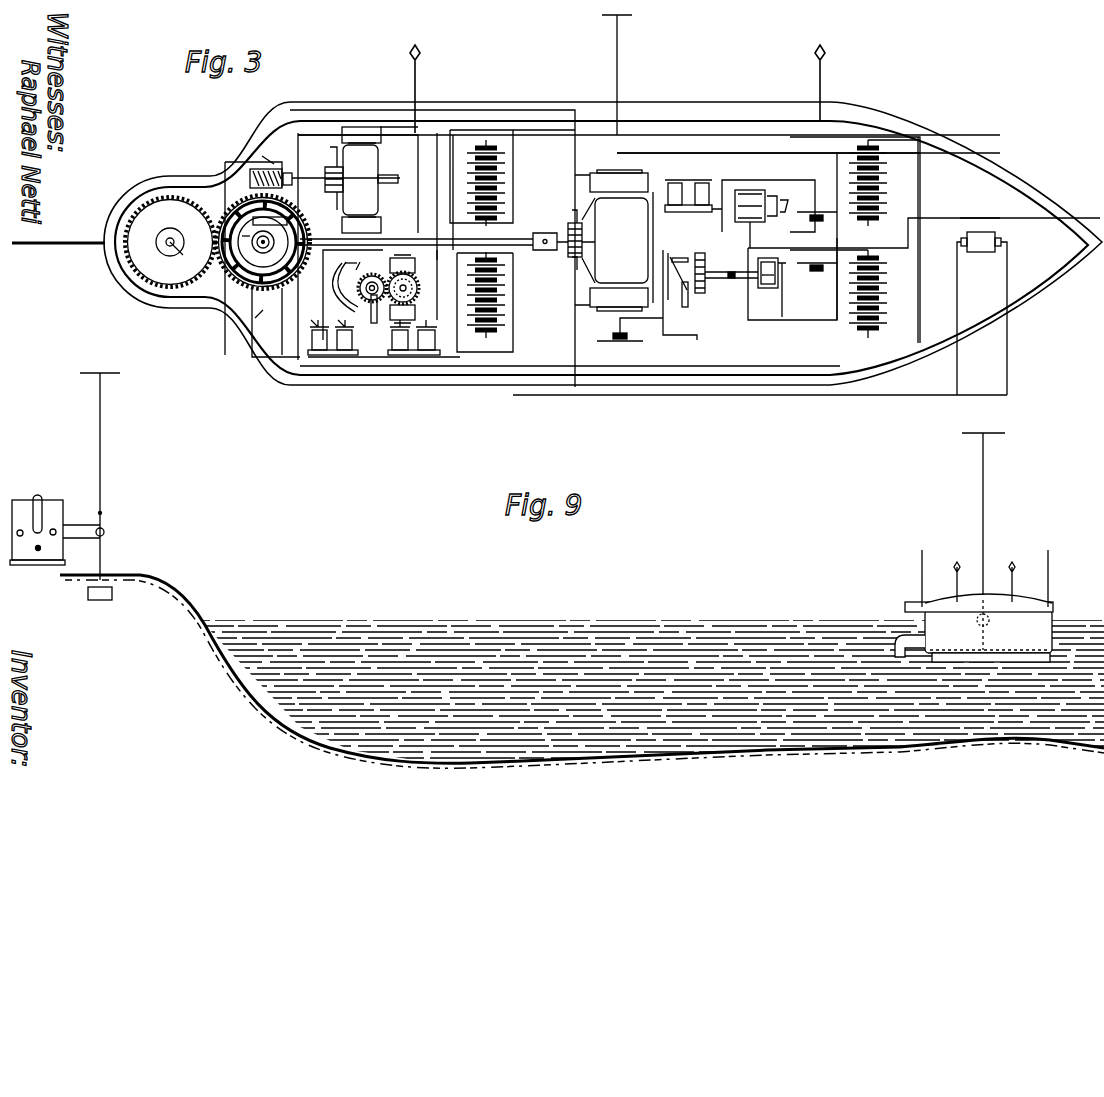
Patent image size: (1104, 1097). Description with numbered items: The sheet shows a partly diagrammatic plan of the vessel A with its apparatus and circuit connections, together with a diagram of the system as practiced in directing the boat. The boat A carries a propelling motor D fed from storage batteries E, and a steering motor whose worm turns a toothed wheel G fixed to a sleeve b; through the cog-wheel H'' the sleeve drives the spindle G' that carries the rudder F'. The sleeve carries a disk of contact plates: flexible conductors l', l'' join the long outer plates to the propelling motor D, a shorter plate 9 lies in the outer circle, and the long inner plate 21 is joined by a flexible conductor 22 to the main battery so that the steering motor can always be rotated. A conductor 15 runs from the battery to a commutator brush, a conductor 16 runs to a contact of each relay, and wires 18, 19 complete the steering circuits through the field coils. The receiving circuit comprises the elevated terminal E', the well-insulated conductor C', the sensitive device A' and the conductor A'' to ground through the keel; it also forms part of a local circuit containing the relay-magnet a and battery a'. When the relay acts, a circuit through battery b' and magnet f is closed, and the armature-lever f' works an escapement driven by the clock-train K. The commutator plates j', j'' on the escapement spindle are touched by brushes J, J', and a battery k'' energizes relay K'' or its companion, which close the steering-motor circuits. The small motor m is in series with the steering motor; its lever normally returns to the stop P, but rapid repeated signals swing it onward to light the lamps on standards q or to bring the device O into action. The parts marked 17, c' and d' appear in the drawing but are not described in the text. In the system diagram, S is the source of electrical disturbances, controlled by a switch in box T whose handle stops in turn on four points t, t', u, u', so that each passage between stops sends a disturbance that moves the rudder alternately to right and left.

In FIG. 3, the terminal E' is at (625, 74).
In FIG. 9, the terminal E' is at (983, 514).
In FIG. 3, the standards q is at (621, 89).
In FIG. 3, the conductor C' is at (768, 146).
In FIG. 3, the flexible conductor l' is at (268, 153).
In FIG. 3, the flexible conductor l'' is at (260, 315).
In FIG. 3, the cog-wheel H'' is at (170, 242).
In FIG. 3, the spindle G' is at (183, 254).
In FIG. 3, the toothed wheel G is at (263, 234).
In FIG. 3, the sleeve b is at (263, 242).
In FIG. 3, the flexible conductor 22 is at (271, 242).
In FIG. 3, the long conducting-plate 21 is at (270, 222).
In FIG. 3, the short contact plate 9 is at (233, 236).
In FIG. 3, the conductor 15 is at (326, 178).
In FIG. 3, the rudder F' is at (370, 180).
In FIG. 3, the electromagnetic motor D is at (608, 240).
In FIG. 3, the storage batteries E is at (685, 241).
In FIG. 3, the small motor m is at (411, 284).
In FIG. 3, the wire 19 is at (419, 288).
In FIG. 3, the stop P is at (372, 304).
In FIG. 3, the wire 18 is at (342, 287).
In FIG. 3, the conductor 16 is at (348, 255).
In FIG. 3, the lever arm 17 is at (364, 258).
In FIG. 3, the clock-train K is at (330, 337).
In FIG. 3, the relay-magnet K'' is at (421, 337).
In FIG. 3, the armature-lever f' is at (688, 183).
In FIG. 3, the magnet f is at (740, 206).
In FIG. 3, the relay-magnet a is at (750, 219).
In FIG. 3, the contact c' is at (777, 202).
In FIG. 3, the battery b' is at (817, 209).
In FIG. 3, the battery a' is at (817, 272).
In FIG. 3, the conductor A'' is at (980, 210).
In FIG. 3, the sensitive device A' is at (768, 284).
In FIG. 3, the contact arm d' is at (787, 290).
In FIG. 3, the contact plate j'' is at (726, 283).
In FIG. 3, the contact plate j' is at (676, 264).
In FIG. 3, the brush J' is at (679, 295).
In FIG. 3, the brush J is at (674, 295).
In FIG. 3, the battery k'' is at (629, 329).
In FIG. 3, the device O is at (982, 313).
In FIG. 9, the vessel A is at (974, 606).
In FIG. 9, the box T is at (37, 525).
In FIG. 9, the stop point u is at (31, 514).
In FIG. 9, the stop point t is at (12, 533).
In FIG. 9, the stop point t' is at (51, 525).
In FIG. 9, the stop point u' is at (44, 549).
In FIG. 9, the source of electrical disturbance S is at (91, 486).